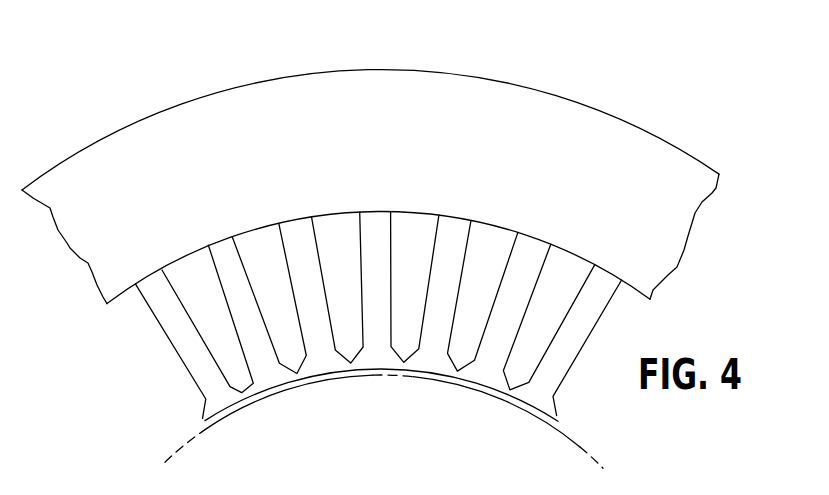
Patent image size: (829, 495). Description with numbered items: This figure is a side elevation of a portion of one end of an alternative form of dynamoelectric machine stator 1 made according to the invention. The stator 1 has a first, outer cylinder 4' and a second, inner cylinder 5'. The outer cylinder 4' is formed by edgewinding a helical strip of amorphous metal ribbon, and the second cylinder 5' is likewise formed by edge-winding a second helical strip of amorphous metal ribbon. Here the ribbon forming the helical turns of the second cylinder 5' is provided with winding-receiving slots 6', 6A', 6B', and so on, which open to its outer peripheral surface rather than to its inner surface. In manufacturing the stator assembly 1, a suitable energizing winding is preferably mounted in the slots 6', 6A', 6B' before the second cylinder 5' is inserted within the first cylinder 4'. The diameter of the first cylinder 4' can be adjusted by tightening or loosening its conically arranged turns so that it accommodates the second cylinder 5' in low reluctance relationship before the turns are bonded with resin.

The stator 1 is at (370, 214).
The first, outer cylinder 4' is at (370, 187).
The second, inner cylinder 5' is at (376, 418).
The slot 6' is at (207, 319).
The slot 6A' is at (269, 298).
The slot 6B' is at (338, 287).